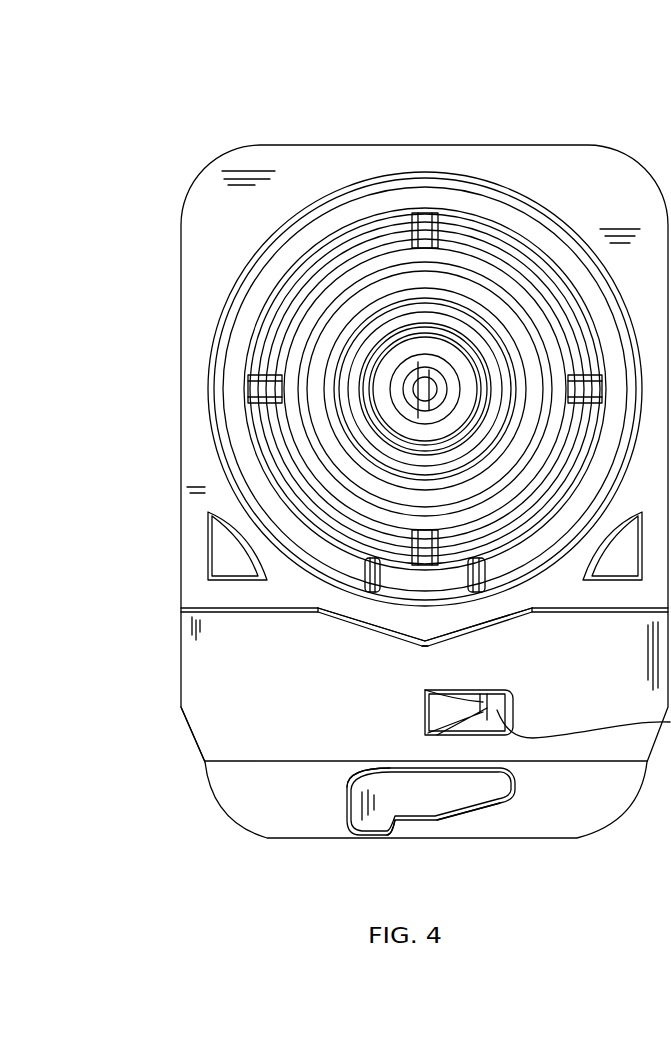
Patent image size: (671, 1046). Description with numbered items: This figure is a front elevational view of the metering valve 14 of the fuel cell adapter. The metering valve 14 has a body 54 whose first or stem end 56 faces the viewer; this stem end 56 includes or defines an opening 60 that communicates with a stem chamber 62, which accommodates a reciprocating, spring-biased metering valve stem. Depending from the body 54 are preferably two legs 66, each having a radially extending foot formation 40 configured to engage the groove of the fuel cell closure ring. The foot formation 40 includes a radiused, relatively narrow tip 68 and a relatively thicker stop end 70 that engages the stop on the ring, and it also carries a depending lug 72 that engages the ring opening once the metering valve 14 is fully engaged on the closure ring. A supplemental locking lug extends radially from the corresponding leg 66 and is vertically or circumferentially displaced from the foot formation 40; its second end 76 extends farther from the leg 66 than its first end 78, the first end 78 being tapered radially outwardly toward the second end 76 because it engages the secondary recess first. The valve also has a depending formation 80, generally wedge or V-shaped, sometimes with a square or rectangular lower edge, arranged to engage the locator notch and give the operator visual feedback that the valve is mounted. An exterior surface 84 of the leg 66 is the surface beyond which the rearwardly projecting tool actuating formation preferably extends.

The metering valve 14 is at (190, 172).
The body 54 is at (337, 185).
The first or stem end 56 is at (573, 182).
The opening 60 is at (240, 312).
The stem chamber 62 is at (447, 258).
The leg 66 is at (293, 665).
The tip 68 is at (513, 789).
The foot formation 40 is at (435, 787).
The stop end 70 is at (345, 800).
The depending lug 72 is at (372, 835).
The second end 76 is at (513, 700).
The first end 78 is at (433, 712).
The depending formation 80 is at (375, 632).
The exterior surface 84 is at (390, 659).